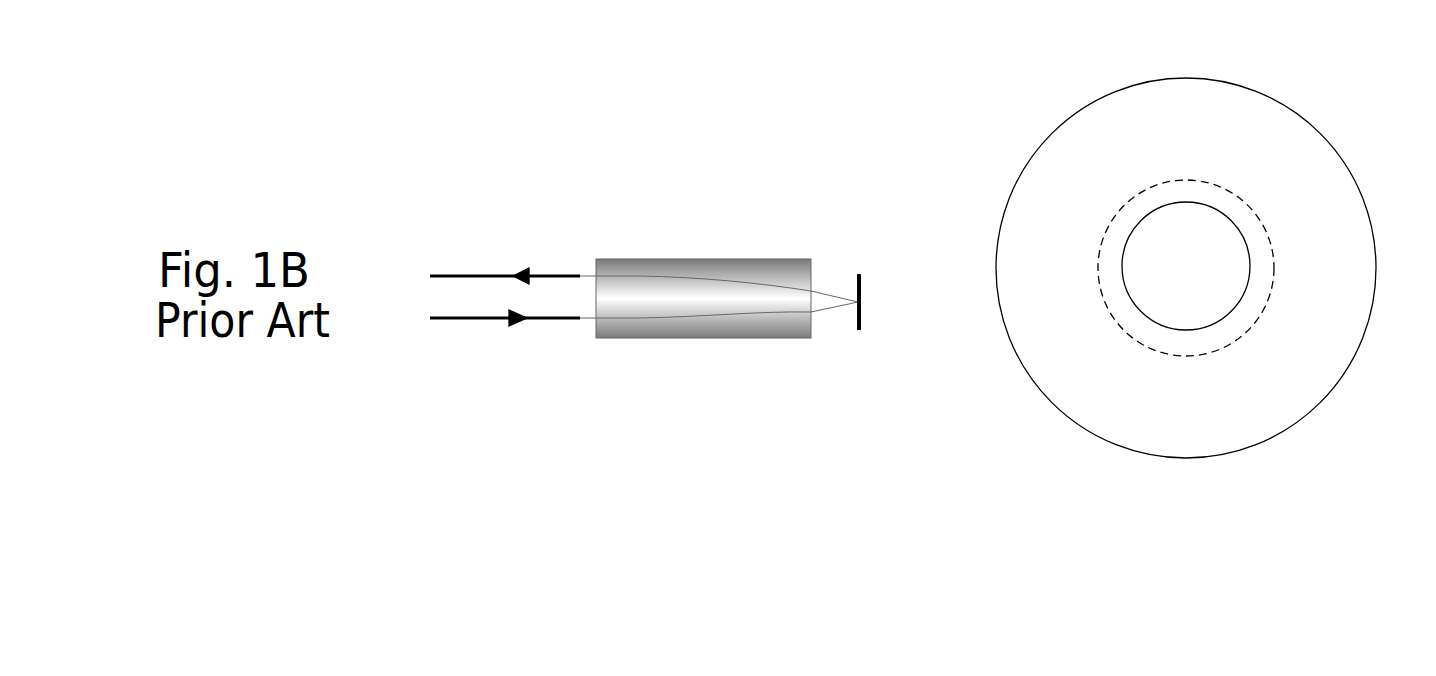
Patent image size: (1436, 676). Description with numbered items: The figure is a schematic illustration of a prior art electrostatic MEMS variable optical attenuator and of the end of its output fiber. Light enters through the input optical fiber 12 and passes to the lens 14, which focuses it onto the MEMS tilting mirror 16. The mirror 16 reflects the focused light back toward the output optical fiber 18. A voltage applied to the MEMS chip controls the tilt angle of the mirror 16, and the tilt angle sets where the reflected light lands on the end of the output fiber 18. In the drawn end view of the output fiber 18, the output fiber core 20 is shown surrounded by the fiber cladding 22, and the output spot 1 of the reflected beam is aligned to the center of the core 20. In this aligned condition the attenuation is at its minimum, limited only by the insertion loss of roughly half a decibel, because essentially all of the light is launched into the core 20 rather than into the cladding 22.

The output spot 1 is at (1271, 298).
The input optical fiber 12 is at (465, 322).
The lens 14 is at (742, 270).
The MEMS tilting mirror 16 is at (851, 288).
The output optical fiber 18 is at (465, 270).
The output fiber core 20 is at (1213, 227).
The fiber cladding 22 is at (1075, 398).